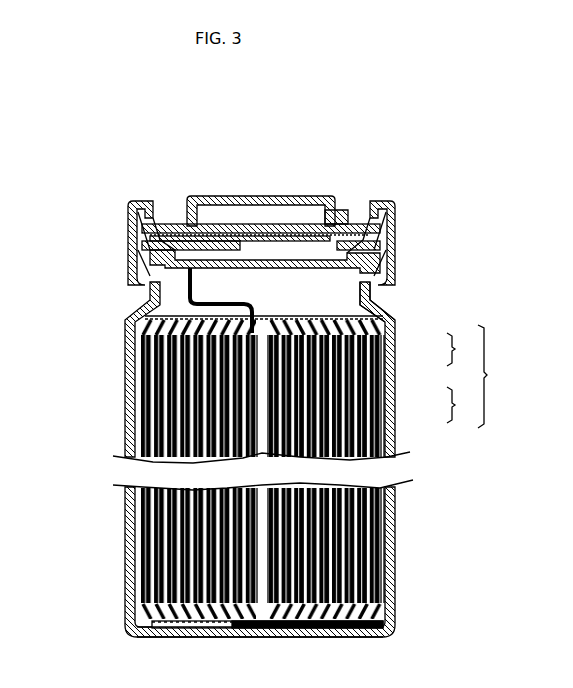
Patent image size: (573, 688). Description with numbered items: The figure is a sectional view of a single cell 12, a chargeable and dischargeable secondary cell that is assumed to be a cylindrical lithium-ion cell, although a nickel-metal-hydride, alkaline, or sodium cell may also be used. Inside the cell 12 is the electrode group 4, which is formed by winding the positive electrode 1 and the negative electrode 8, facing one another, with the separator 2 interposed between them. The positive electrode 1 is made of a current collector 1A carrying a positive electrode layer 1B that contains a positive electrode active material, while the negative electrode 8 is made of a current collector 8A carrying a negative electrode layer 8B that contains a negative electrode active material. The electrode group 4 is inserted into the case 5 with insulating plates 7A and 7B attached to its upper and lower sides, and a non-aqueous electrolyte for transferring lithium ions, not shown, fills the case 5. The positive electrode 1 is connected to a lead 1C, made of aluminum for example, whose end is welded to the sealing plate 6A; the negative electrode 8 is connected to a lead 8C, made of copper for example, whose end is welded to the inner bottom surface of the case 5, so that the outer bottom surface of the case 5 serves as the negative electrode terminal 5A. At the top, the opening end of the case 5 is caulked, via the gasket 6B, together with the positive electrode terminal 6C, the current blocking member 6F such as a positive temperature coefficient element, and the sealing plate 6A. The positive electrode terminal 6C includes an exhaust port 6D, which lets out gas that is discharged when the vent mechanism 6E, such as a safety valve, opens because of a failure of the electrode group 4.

The positive electrode 1 is at (306, 469).
The current collector 1A is at (380, 350).
The positive electrode layer 1B is at (370, 367).
The lead 1C is at (190, 298).
The separator 2 is at (347, 330).
The electrode group 4 is at (306, 470).
The case 5 is at (398, 520).
The negative electrode terminal 5A is at (308, 637).
The sealing plate 6A is at (392, 250).
The gasket 6B is at (385, 205).
The positive electrode terminal 6C is at (282, 196).
The exhaust port 6D is at (334, 197).
The vent mechanism 6E is at (312, 232).
The current blocking member 6F is at (380, 242).
The insulating plate 7A is at (387, 308).
The insulating plate 7B is at (147, 622).
The negative electrode 8 is at (370, 469).
The current collector 8A is at (384, 400).
The negative electrode layer 8B is at (384, 414).
The lead 8C is at (380, 615).
The cell 12 is at (112, 198).